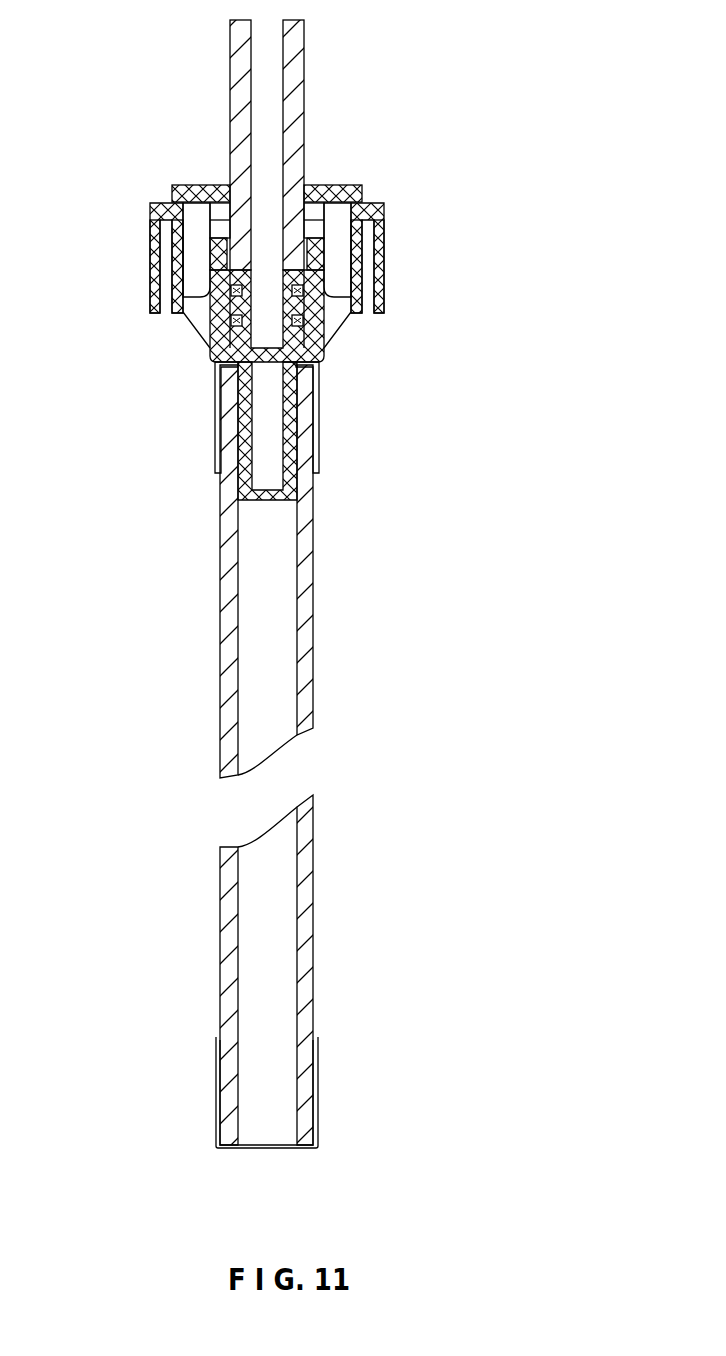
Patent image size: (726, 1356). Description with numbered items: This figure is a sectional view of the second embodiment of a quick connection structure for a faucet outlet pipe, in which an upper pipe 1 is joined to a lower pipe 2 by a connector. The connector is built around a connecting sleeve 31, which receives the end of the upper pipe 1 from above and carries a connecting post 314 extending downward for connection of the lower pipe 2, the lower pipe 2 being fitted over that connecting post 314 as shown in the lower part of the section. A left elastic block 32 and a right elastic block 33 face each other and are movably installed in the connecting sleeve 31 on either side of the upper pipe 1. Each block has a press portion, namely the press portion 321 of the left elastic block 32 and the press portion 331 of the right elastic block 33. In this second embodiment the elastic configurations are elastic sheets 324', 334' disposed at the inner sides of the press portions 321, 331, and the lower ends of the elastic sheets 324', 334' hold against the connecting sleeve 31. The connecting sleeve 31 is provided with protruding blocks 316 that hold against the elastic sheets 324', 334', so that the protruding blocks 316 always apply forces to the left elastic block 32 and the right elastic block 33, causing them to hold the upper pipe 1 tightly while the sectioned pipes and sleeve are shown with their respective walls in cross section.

The upper pipe 1 is at (293, 123).
The lower pipe 2 is at (300, 988).
The connecting sleeve 31 is at (362, 192).
The left elastic block 32 is at (150, 220).
The right elastic block 33 is at (385, 230).
The press portion 321 is at (150, 255).
The press portion 331 is at (385, 258).
The elastic sheet 324' is at (116, 266).
The elastic sheet 334' is at (427, 266).
The protruding block 316 is at (195, 318).
The connecting post 314 is at (297, 488).